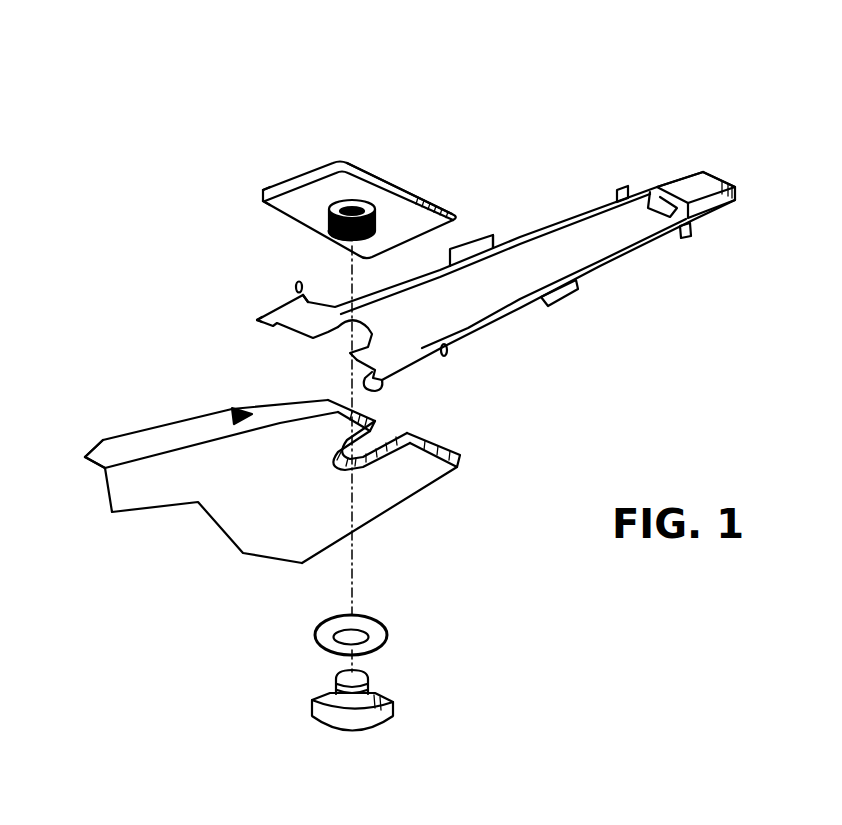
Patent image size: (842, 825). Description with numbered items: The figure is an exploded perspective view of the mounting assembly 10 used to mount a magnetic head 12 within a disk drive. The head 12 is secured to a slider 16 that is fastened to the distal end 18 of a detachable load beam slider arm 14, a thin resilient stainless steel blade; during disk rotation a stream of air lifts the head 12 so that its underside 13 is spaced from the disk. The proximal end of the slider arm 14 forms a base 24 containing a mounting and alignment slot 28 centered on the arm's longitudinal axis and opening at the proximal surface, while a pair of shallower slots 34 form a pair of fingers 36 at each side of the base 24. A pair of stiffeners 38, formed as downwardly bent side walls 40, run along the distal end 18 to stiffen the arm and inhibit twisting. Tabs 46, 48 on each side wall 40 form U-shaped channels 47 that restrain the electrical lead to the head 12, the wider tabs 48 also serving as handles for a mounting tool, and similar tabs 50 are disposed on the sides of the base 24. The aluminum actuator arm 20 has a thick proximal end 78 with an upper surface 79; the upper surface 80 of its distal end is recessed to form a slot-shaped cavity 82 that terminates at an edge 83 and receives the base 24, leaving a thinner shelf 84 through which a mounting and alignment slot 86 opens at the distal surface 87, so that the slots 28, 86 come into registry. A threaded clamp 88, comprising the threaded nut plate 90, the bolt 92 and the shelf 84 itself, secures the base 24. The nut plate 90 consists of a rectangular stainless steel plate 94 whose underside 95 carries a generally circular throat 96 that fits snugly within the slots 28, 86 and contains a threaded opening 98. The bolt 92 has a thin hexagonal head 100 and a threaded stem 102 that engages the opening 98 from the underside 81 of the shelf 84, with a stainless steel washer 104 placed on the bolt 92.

The mounting assembly 10 is at (462, 85).
The magnetic head 12 is at (742, 217).
The underside 13 is at (708, 205).
The load beam slider arm 14 is at (488, 257).
The slider 16 is at (710, 174).
The distal end 18 is at (723, 195).
The actuator arm 20 is at (267, 463).
The base 24 is at (270, 311).
The mounting and alignment slot 28 is at (342, 340).
The shallower slots 34 is at (386, 382).
The fingers 36 is at (257, 322).
The stiffeners 38 is at (538, 249).
The side walls 40 is at (563, 217).
The tabs 46 is at (623, 187).
The U-shaped channels 47 is at (502, 234).
The tabs 48 is at (480, 237).
The tabs 50 is at (298, 284).
The proximal end 78 is at (68, 433).
The upper surface 79 is at (185, 420).
The upper surface 80 is at (277, 412).
The underside 81 is at (422, 483).
The slot-shaped cavity 82 is at (452, 415).
The edge 83 is at (243, 410).
The shelf 84 is at (462, 465).
The mounting and alignment slot 86 is at (378, 440).
The distal surface 87 is at (337, 413).
The threaded clamp 88 is at (327, 169).
The threaded nut plate 90 is at (283, 162).
The bolt 92 is at (367, 704).
The rectangular stainless steel plate 94 is at (410, 189).
The underside 95 is at (262, 205).
The throat 96 is at (376, 219).
The threaded opening 98 is at (330, 237).
The head 100 is at (387, 724).
The threaded stem 102 is at (369, 686).
The washer 104 is at (387, 633).